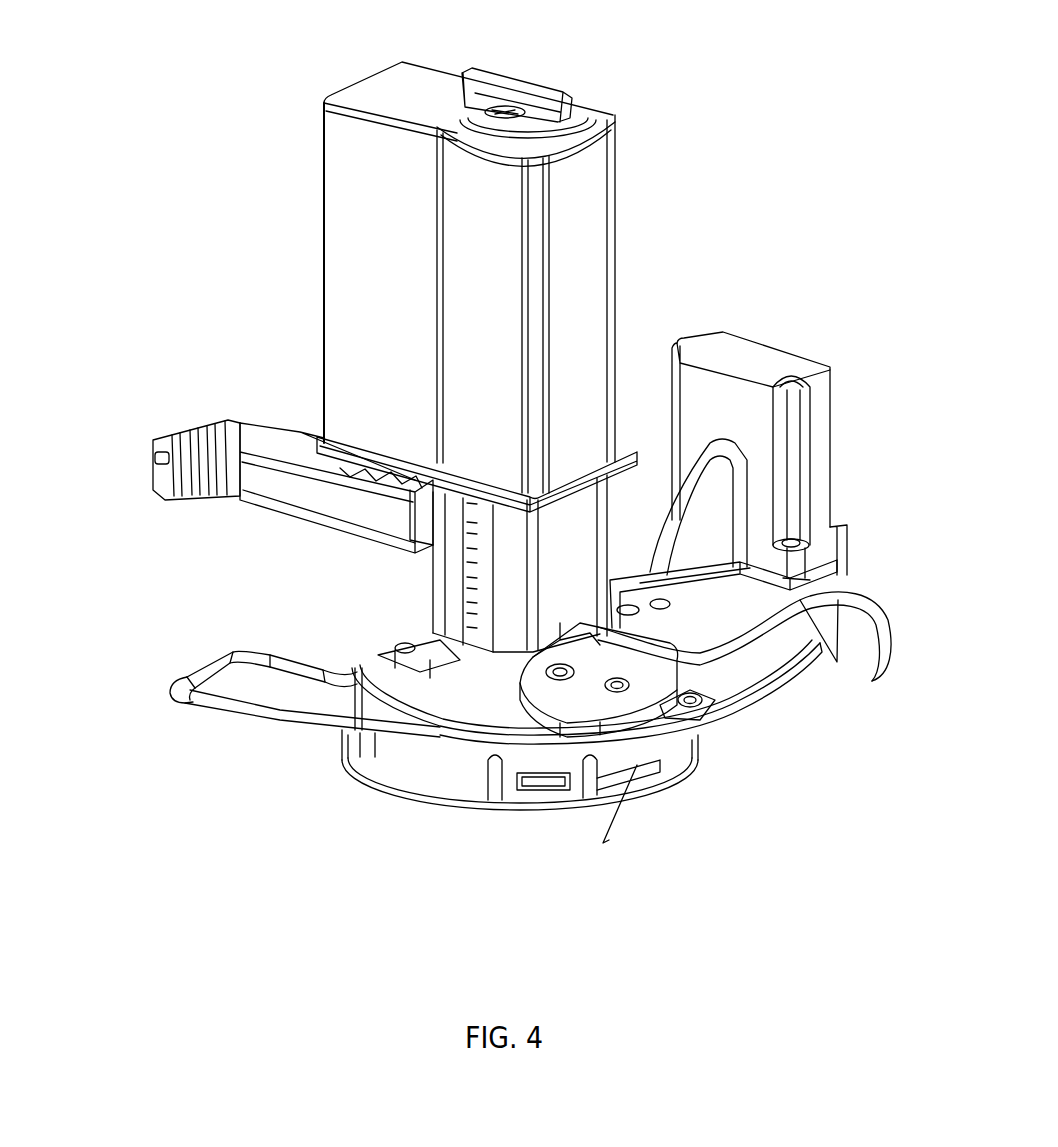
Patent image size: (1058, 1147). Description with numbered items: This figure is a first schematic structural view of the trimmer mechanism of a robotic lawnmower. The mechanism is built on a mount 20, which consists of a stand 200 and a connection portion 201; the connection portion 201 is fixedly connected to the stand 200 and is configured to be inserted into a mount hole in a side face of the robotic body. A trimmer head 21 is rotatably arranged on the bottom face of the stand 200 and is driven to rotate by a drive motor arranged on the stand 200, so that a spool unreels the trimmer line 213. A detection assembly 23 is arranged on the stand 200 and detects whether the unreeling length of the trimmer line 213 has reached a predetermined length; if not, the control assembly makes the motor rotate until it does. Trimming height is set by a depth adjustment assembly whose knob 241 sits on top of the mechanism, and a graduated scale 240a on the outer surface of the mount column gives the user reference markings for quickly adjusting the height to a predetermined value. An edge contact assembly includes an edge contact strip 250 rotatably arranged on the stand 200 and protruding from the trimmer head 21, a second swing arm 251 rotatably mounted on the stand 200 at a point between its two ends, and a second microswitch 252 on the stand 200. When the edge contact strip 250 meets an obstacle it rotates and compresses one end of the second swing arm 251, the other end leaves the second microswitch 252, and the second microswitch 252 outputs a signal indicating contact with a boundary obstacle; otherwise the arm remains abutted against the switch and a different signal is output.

The mount 20 is at (80, 350).
The stand 200 is at (347, 383).
The connection portion 201 is at (222, 413).
The knob 241 is at (527, 103).
The detection assembly 23 is at (827, 480).
The graduated scale 240a is at (483, 620).
The trimmer head 21 is at (473, 787).
The second microswitch 252 is at (583, 690).
The second swing arm 251 is at (690, 710).
The edge contact strip 250 is at (750, 703).
The trimmer line 213 is at (612, 848).